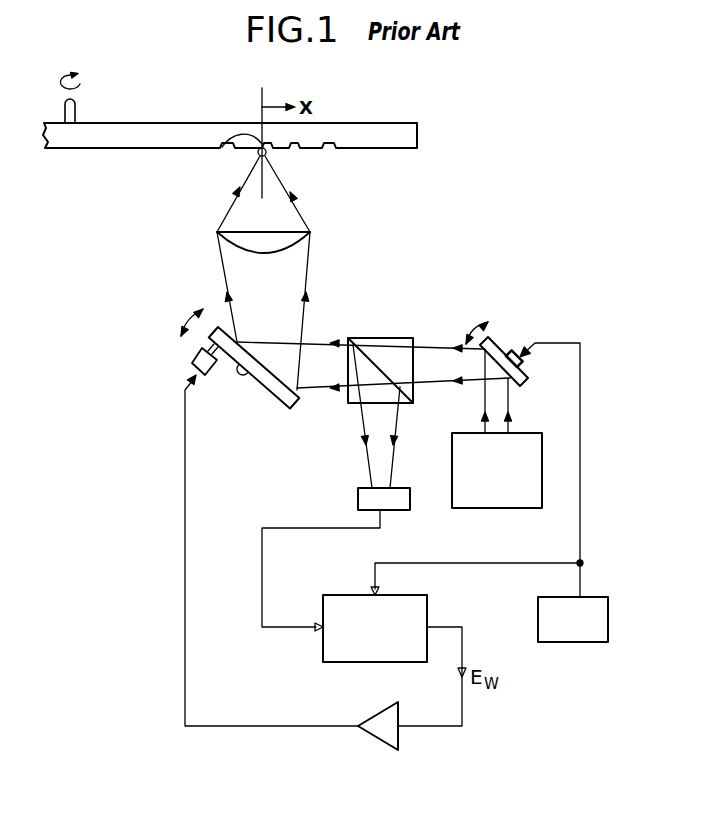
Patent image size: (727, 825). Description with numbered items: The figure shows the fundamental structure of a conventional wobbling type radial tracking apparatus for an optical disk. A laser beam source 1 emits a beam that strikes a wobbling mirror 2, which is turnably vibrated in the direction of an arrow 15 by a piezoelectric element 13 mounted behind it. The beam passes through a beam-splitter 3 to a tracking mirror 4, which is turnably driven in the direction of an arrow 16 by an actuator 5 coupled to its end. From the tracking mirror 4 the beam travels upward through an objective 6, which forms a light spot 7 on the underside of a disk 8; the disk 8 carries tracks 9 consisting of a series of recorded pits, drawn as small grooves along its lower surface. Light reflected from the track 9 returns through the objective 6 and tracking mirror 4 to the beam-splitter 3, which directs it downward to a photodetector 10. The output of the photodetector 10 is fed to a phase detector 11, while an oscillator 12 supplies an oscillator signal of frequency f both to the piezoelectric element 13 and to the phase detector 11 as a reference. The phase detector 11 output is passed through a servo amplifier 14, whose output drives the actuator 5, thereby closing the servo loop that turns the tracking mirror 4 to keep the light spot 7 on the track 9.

The laser beam source 1 is at (505, 510).
The wobbling mirror 2 is at (495, 340).
The beam-splitter 3 is at (385, 338).
The tracking mirror 4 is at (268, 393).
The actuator 5 is at (193, 361).
The objective 6 is at (312, 232).
The light spot 7 is at (266, 154).
The disk 8 is at (378, 122).
The tracks 9 is at (222, 147).
The photodetector 10 is at (358, 499).
The phase detector 11 is at (323, 652).
The oscillator 12 is at (608, 618).
The piezoelectric element 13 is at (527, 365).
The servo amplifier 14 is at (383, 744).
The arrow 15 is at (476, 330).
The arrow 16 is at (188, 322).